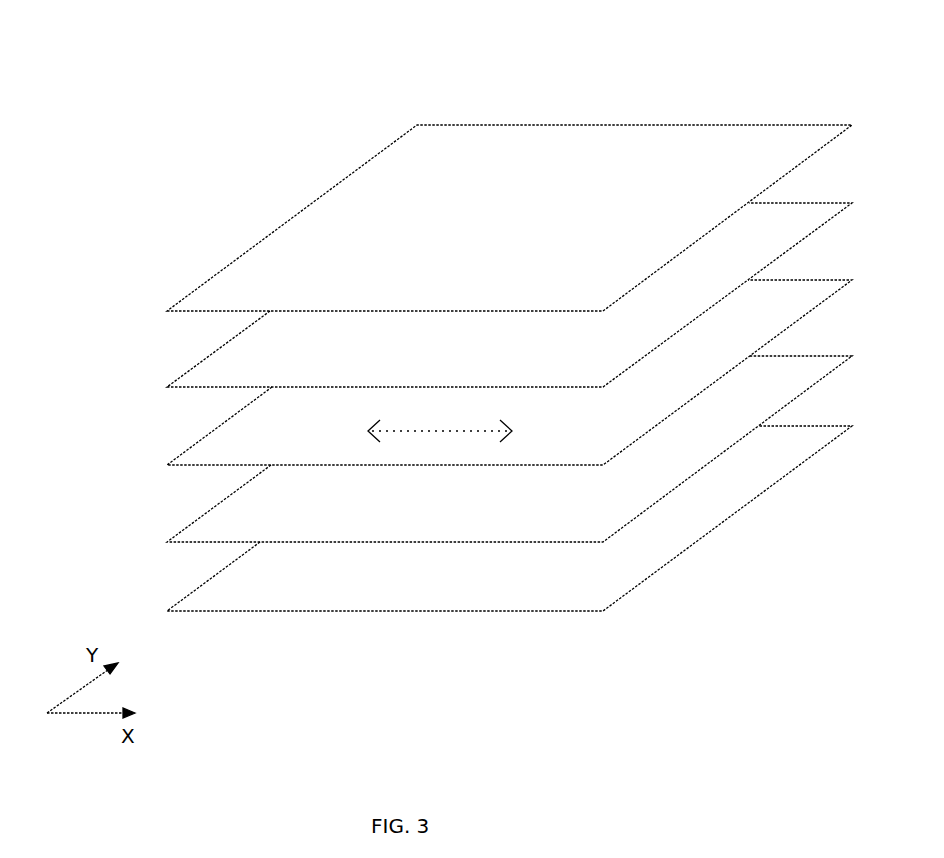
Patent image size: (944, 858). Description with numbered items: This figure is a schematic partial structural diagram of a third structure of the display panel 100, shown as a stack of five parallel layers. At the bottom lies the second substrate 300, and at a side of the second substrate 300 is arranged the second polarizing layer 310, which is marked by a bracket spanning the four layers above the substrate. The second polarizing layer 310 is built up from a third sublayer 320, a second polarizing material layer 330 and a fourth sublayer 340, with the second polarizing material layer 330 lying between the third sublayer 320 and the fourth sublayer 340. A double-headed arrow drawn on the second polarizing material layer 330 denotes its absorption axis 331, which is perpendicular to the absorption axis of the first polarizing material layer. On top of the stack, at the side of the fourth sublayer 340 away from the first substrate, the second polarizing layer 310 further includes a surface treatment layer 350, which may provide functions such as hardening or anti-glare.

The display panel 100 is at (142, 75).
The second substrate 300 is at (205, 580).
The second polarizing layer 310 is at (108, 250).
The third sublayer 320 is at (210, 508).
The second polarizing material layer 330 is at (205, 436).
The absorption axis of the second polarizing material layer 331 is at (402, 432).
The fourth sublayer 340 is at (205, 358).
The surface treatment layer 350 is at (200, 285).